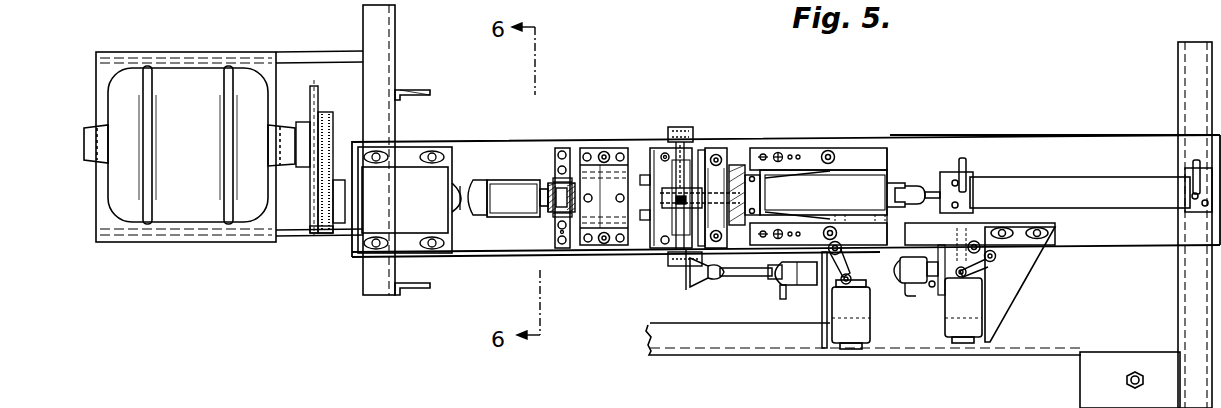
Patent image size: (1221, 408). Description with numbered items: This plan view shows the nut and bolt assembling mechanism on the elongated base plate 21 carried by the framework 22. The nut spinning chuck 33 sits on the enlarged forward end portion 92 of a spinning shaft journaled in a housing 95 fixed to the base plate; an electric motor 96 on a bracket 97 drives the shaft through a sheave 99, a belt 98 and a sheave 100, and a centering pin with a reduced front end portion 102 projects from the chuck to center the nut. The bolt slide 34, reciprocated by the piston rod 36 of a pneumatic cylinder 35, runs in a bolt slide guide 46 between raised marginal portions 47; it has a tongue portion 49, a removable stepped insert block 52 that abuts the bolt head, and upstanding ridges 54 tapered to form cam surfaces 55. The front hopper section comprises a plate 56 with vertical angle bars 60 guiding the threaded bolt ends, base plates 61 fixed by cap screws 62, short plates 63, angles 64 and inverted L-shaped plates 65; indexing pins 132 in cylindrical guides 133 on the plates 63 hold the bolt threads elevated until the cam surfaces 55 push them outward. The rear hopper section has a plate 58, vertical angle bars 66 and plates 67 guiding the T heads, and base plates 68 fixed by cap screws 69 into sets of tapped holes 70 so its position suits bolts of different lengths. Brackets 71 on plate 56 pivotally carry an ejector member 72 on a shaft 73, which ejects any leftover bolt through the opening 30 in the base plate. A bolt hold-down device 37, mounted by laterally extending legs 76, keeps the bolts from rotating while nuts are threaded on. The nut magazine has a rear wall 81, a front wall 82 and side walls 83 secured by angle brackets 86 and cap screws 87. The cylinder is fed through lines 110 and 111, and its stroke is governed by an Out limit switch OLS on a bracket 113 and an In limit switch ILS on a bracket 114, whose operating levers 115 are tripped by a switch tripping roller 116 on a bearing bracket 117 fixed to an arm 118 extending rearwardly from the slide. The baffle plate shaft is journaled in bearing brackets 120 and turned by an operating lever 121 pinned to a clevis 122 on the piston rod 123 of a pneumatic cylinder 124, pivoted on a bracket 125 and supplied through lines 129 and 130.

The base plate 21 is at (1070, 136).
The framework 22 is at (1185, 88).
The opening 30 is at (548, 183).
The nut spinning chuck 33 is at (503, 208).
The bolt slide 34 is at (848, 201).
The pneumatic cylinder 35 is at (1065, 201).
The piston rod 36 is at (930, 190).
The bolt hold-down device 37 is at (594, 207).
The bolt slide guide 46 is at (850, 147).
The raised marginal portions 47 is at (813, 148).
The tongue portion 49 is at (702, 148).
The stepped insert block 52 is at (762, 196).
The upstanding ridges 54 is at (872, 171).
The cam surfaces 55 is at (782, 214).
The plate 56 is at (652, 150).
The plate 58 is at (772, 279).
The vertical angle bars 60 is at (670, 226).
The base plates 61 is at (672, 152).
The cap screws 62 is at (665, 155).
The plates 63 is at (672, 258).
The angles 64 is at (696, 282).
The inverted L-shaped plates 65 is at (722, 278).
The vertical angle bars 66 is at (738, 163).
The plates 67 is at (720, 150).
The base plates 68 is at (766, 150).
The cap screws 69 is at (780, 152).
The tapped holes 70 is at (791, 155).
The brackets 71 is at (615, 246).
The ejector member 72 is at (602, 166).
The shaft 73 is at (566, 150).
The laterally extending legs 76 is at (562, 150).
The rear wall 81 is at (562, 214).
The front wall 82 is at (552, 212).
The side walls 83 is at (550, 181).
The angle brackets 86 is at (558, 171).
The cap screws 87 is at (560, 240).
The enlarged forward end portion 92 is at (478, 206).
The housing 95 is at (409, 210).
The electric motor 96 is at (172, 160).
The bracket 97 is at (258, 222).
The belt 98 is at (328, 160).
The sheave 99 is at (313, 125).
The sheave 100 is at (318, 236).
The reduced front end portion 102 is at (545, 185).
The line 110 is at (966, 162).
The line 111 is at (1192, 165).
The bracket 113 is at (1030, 268).
The bracket 114 is at (822, 310).
The operating levers 115 is at (850, 263).
The switch tripping roller 116 is at (996, 258).
The bearing bracket 117 is at (982, 240).
The arm 118 is at (945, 224).
The bearing brackets 120 is at (690, 126).
The operating lever 121 is at (690, 240).
The clevis 122 is at (694, 275).
The piston rod 123 is at (737, 277).
The pneumatic cylinder 124 is at (806, 282).
The bracket 125 is at (937, 289).
The line 129 is at (908, 290).
The line 130 is at (781, 295).
The indexing pins 132 is at (678, 238).
The cylindrical guide 133 is at (677, 141).
The In limit switch ILS is at (850, 328).
The Out limit switch OLS is at (968, 328).